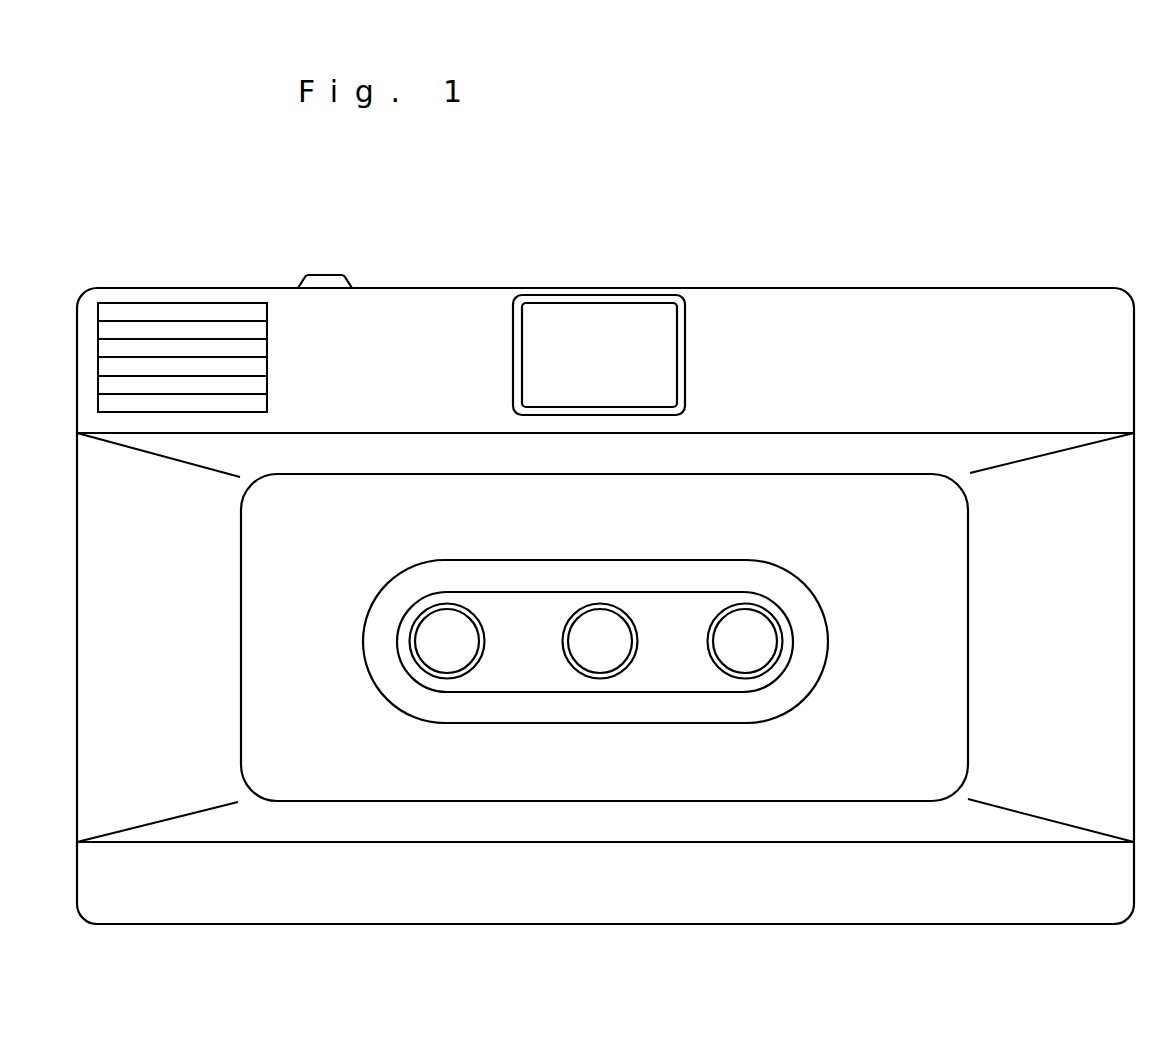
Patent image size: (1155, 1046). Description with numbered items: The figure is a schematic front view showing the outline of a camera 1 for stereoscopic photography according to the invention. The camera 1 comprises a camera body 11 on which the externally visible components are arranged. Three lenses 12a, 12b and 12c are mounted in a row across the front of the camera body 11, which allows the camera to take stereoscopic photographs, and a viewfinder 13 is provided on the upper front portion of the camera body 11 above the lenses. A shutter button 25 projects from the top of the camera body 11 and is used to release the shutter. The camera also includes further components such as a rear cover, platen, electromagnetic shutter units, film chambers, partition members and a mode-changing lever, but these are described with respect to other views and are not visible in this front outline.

The camera 1 is at (691, 188).
The camera body 11 is at (948, 303).
The lens 12a is at (452, 623).
The lens 12b is at (608, 625).
The lens 12c is at (752, 625).
The viewfinder 13 is at (537, 325).
The shutter button 25 is at (326, 281).